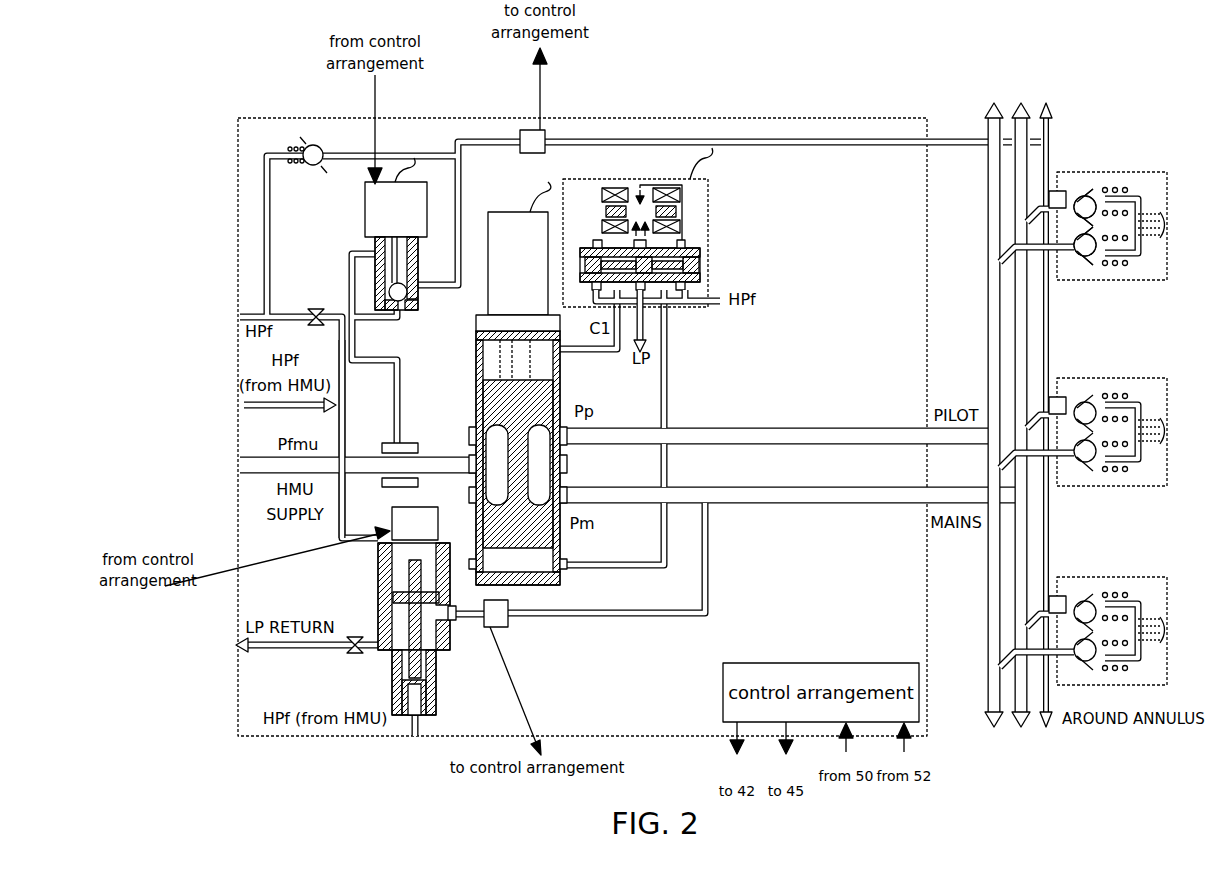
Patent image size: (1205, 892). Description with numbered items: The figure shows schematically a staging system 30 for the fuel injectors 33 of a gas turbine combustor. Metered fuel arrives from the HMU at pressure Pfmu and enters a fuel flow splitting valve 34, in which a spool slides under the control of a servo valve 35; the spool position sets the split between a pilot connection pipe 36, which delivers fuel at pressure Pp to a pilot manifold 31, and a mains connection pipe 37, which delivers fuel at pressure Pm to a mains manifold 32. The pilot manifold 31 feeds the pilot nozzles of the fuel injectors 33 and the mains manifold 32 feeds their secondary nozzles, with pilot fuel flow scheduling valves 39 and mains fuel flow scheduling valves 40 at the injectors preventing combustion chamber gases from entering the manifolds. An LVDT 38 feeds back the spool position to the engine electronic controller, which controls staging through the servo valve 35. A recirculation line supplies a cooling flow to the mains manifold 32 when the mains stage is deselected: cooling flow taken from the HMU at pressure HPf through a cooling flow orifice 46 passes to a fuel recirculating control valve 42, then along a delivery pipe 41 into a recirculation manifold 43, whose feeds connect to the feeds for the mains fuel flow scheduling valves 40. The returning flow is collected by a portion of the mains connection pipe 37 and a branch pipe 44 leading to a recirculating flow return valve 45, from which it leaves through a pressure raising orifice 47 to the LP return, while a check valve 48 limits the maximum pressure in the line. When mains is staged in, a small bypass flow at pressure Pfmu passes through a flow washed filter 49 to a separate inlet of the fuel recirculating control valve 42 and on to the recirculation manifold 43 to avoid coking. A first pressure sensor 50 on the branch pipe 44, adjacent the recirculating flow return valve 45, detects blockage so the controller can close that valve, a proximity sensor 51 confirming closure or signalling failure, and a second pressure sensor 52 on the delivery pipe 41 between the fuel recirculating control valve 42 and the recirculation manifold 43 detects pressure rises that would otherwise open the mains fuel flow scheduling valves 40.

The staging system 30 is at (613, 104).
The pilot manifold 31 is at (988, 297).
The mains manifold 32 is at (1028, 352).
The fuel injectors 33 is at (1141, 150).
The fuel flow splitting valve 34 is at (463, 398).
The servo valve 35 is at (708, 221).
The pilot connection pipe 36 is at (852, 428).
The mains connection pipe 37 is at (855, 503).
The LVDT 38 is at (518, 256).
The pilot fuel flow scheduling valves 39 is at (1087, 272).
The mains fuel flow scheduling valves 40 is at (1087, 190).
The delivery pipe 41 is at (862, 148).
The fuel recirculating control valve 42 is at (396, 234).
The recirculation manifold 43 is at (1048, 528).
The branch pipe 44 is at (650, 614).
The recirculating flow return valve 45 is at (460, 690).
The cooling flow orifice 46 is at (316, 308).
The pressure raising orifice 47 is at (355, 636).
The check valve 48 is at (316, 166).
The flow washed filter 49 is at (395, 488).
The first pressure sensor 50 is at (504, 628).
The proximity sensor 51 is at (415, 523).
The second pressure sensor 52 is at (528, 130).